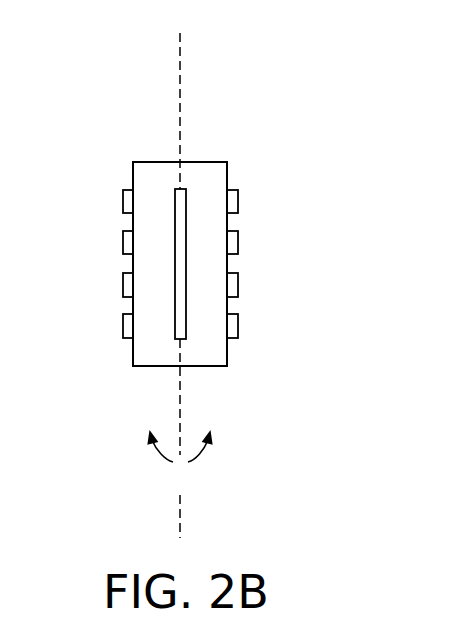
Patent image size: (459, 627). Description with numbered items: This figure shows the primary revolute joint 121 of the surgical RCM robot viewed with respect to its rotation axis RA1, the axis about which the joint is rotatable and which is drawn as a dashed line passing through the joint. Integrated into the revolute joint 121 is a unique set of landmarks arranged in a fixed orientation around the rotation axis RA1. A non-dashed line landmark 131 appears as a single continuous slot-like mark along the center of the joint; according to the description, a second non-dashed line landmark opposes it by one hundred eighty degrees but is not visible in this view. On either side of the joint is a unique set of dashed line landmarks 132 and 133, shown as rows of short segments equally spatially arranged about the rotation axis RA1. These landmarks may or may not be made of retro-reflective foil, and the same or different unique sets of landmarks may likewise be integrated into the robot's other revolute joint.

The rotation axis RA1 is at (162, 71).
The primary revolute joint 121 is at (208, 162).
The non-dashed line landmark 131 is at (186, 218).
The dashed line landmark 132 is at (105, 185).
The dashed line landmark 133 is at (257, 184).